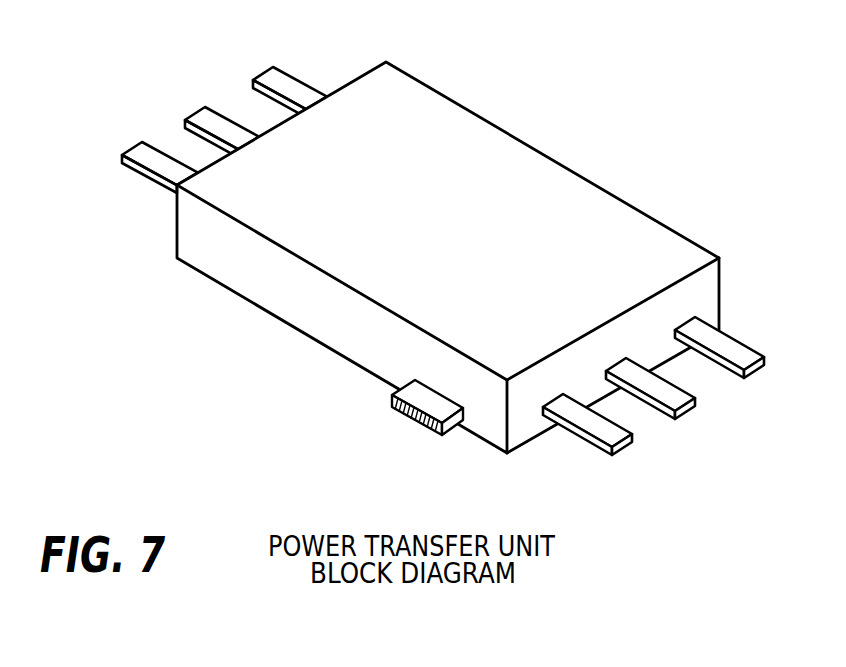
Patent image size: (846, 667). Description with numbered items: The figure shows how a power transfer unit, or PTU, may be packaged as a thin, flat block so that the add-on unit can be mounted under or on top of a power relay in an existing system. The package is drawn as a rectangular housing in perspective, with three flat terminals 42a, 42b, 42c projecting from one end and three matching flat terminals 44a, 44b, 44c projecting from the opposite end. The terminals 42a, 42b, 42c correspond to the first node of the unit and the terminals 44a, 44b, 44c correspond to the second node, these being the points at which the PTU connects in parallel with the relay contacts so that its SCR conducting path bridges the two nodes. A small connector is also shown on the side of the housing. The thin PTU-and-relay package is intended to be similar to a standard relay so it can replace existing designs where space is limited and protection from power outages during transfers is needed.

The terminal 42a is at (148, 156).
The terminal 42b is at (208, 120).
The terminal 42c is at (273, 80).
The terminal 44a is at (602, 426).
The terminal 44b is at (663, 384).
The terminal 44c is at (737, 352).